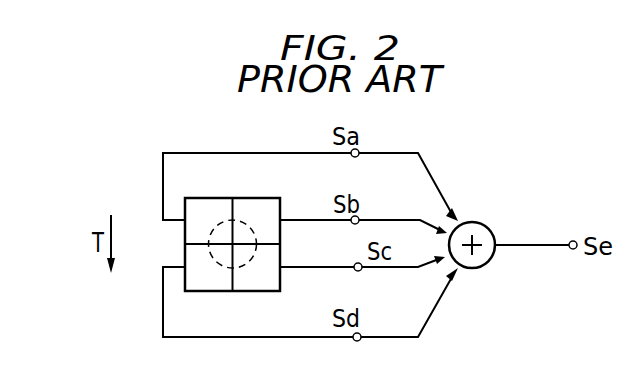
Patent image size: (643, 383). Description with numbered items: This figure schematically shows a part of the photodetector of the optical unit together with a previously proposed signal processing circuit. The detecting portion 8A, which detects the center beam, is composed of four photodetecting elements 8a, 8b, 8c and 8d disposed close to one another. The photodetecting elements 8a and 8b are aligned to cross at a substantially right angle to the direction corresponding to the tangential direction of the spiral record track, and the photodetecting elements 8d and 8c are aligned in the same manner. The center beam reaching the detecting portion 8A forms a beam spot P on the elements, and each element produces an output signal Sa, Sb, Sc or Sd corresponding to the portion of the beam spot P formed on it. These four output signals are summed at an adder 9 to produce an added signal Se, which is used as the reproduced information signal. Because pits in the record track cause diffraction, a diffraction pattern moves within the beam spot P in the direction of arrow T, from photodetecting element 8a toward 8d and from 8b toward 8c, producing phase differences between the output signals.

The detecting portion 8A is at (174, 240).
The photodetecting element 8a is at (224, 201).
The photodetecting element 8b is at (270, 203).
The photodetecting element 8c is at (270, 285).
The photodetecting element 8d is at (222, 285).
The beam spot P is at (250, 228).
The adder 9 is at (490, 262).